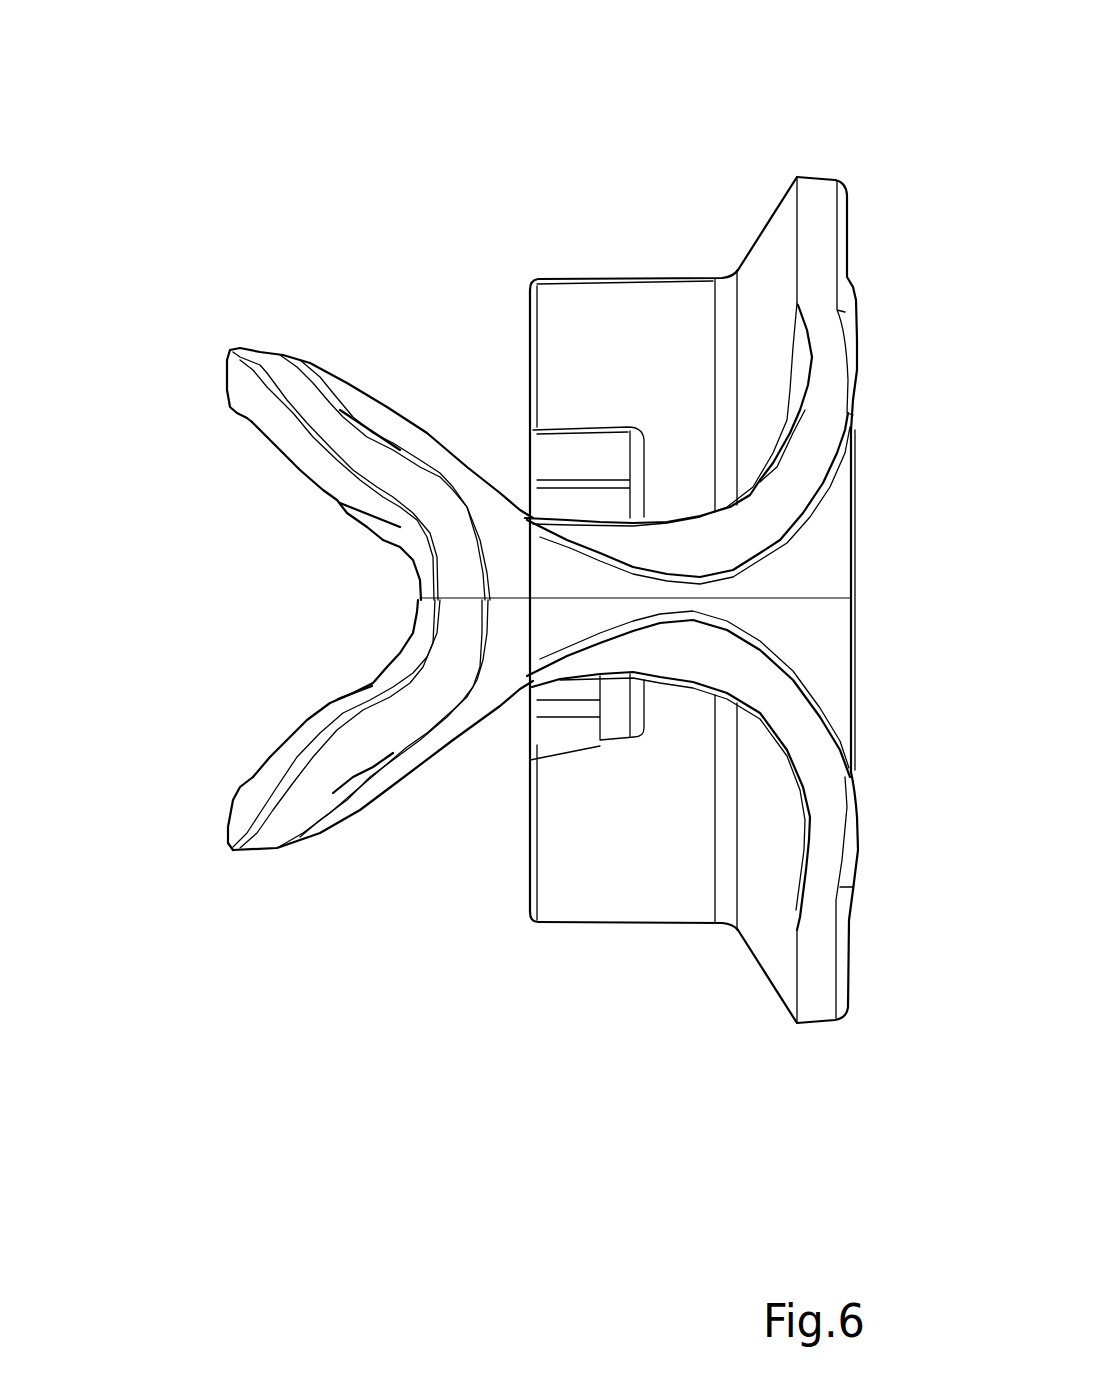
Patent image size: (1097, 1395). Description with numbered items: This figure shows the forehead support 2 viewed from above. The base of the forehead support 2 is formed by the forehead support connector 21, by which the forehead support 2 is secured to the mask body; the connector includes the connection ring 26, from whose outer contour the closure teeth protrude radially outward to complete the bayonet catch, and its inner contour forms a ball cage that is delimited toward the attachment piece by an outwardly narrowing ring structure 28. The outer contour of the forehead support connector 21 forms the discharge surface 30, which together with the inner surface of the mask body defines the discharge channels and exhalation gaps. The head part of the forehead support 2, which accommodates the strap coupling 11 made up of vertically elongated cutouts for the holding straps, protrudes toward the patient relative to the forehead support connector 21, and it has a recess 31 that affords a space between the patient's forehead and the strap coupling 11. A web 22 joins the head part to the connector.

The forehead support 2 is at (778, 157).
The strap coupling 11 is at (332, 393).
The forehead support connector 21 is at (757, 968).
The connecting web 22 is at (553, 630).
The connection ring 26 is at (620, 330).
The ring structure 28 is at (853, 287).
The discharge surface 30 is at (770, 840).
The recess 31 is at (353, 598).